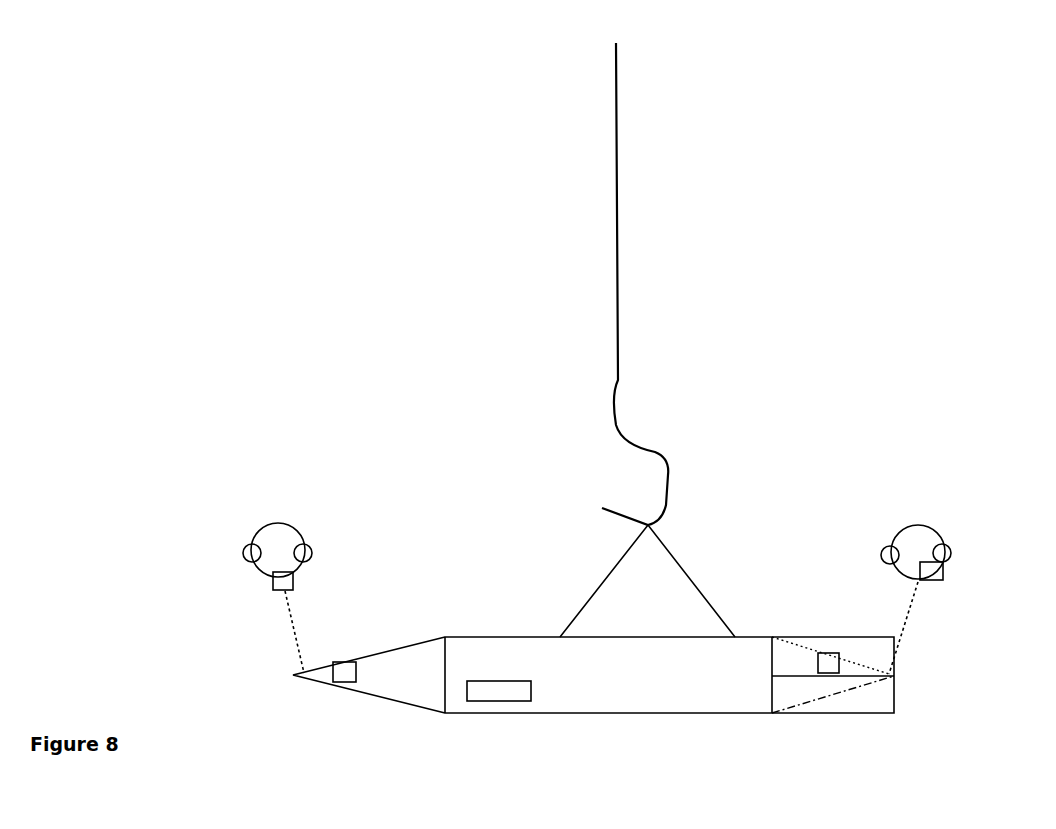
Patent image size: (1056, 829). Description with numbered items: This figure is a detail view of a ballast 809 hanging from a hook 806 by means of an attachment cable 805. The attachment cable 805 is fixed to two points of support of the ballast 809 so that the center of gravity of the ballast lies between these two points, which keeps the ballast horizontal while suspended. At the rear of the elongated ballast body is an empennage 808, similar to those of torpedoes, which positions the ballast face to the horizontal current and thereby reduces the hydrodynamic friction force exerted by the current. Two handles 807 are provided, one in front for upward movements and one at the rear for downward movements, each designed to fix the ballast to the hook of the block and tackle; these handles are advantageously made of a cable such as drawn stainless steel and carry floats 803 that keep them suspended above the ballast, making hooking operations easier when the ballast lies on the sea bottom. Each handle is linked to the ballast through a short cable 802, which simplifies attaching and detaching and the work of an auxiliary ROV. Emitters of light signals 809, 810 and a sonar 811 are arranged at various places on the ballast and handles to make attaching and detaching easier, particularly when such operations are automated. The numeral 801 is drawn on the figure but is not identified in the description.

The first propulsion pod 801 is at (264, 522).
The short cable 802 is at (271, 632).
The floats 803 is at (243, 559).
The attachment cable 805 is at (677, 572).
The hook 806 is at (667, 462).
The handles 807 is at (932, 532).
The empennage 808 is at (862, 713).
The ballast 809 is at (294, 581).
The emitter of light signals 810 is at (822, 653).
The sonar 811 is at (505, 700).